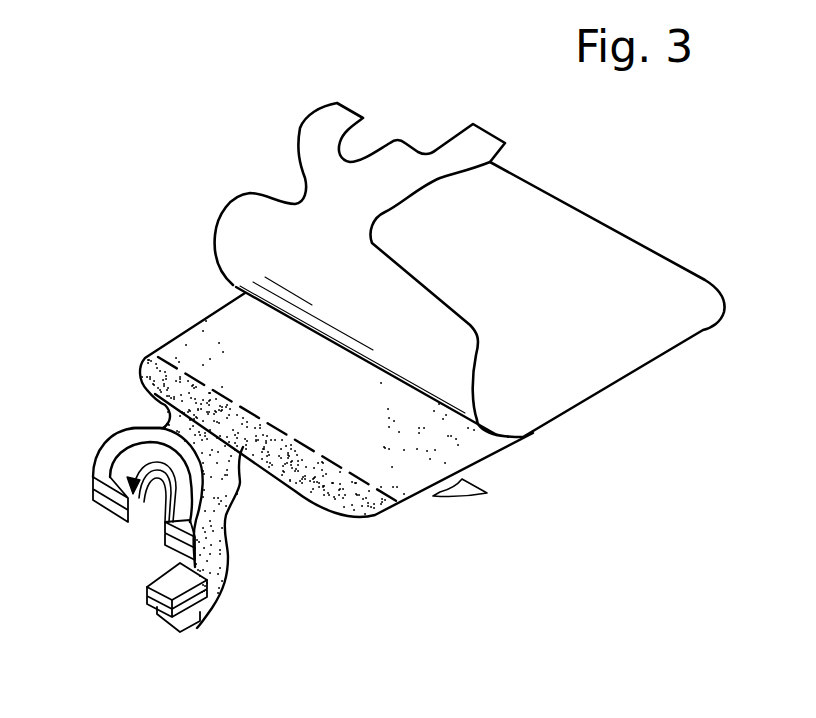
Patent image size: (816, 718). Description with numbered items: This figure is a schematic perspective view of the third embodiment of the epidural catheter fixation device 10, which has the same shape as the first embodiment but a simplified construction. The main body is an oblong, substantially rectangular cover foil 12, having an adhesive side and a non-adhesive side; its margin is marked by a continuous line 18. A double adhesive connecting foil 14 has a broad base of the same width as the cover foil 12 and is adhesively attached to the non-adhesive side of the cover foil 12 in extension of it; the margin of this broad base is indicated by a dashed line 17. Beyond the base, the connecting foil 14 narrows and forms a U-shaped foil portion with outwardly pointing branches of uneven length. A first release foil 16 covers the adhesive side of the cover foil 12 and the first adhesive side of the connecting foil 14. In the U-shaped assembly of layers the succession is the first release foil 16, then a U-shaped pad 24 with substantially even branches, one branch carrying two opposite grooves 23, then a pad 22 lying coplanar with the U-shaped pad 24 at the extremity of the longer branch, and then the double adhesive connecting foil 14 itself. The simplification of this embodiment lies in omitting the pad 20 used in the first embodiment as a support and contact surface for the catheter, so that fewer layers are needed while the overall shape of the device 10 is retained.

The epidural catheter fixation device 10 is at (578, 193).
The cover foil 12 is at (433, 490).
The double adhesive connecting foil 14 is at (233, 502).
The first release foil 16 is at (741, 203).
The dashed line 17 is at (178, 367).
The continuous line 18 is at (145, 313).
The pad 20 is at (100, 500).
The pad 22 is at (177, 587).
The grooves 23 is at (107, 470).
The U-shaped pad 24 is at (127, 497).